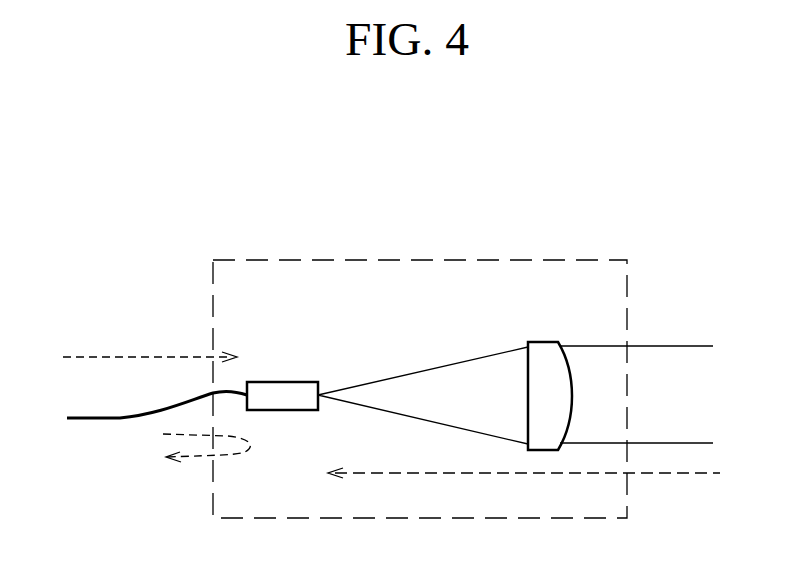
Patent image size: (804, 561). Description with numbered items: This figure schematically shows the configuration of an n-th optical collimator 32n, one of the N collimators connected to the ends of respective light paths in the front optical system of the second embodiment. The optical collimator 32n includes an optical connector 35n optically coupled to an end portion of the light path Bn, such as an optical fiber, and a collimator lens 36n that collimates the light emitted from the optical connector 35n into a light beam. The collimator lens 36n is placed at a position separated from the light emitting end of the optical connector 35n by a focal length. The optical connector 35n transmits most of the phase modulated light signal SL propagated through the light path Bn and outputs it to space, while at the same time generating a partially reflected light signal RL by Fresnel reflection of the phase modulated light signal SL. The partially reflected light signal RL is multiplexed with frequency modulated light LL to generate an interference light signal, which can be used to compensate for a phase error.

The optical collimator 32n is at (280, 259).
The optical connector 35n is at (290, 381).
The collimator lens 36n is at (546, 341).
The light path Bn is at (107, 416).
The phase modulated light signal SL is at (150, 344).
The partially reflected light signal RL is at (203, 463).
The frequency modulated light LL is at (524, 486).